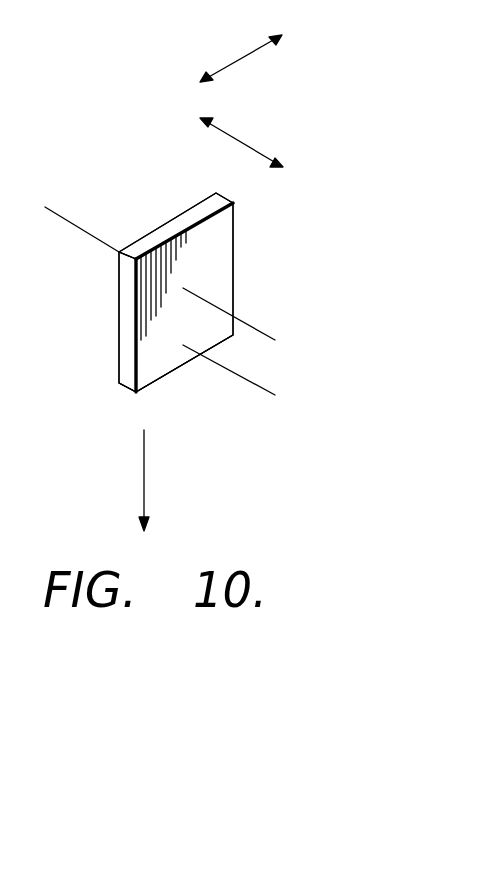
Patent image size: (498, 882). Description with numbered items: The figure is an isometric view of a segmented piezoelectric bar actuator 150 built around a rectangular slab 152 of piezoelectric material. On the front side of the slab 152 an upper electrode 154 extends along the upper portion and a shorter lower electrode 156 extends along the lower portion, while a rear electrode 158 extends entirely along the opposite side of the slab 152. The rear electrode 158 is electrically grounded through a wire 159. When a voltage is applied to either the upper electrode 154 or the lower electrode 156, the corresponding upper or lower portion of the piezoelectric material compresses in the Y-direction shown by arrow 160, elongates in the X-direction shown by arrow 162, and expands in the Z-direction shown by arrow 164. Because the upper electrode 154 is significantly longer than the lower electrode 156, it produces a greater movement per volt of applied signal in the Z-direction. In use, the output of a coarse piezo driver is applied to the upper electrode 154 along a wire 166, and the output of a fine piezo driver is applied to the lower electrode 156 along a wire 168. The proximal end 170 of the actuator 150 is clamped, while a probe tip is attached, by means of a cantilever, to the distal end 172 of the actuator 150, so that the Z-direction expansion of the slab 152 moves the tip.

The segmented piezoelectric bar actuator 150 is at (130, 386).
The rectangular slab 152 is at (127, 294).
The upper electrode 154 is at (215, 243).
The lower electrode 156 is at (160, 364).
The rear electrode 158 is at (175, 215).
The wire 159 is at (60, 215).
The arrow 160 is at (238, 138).
The arrow 162 is at (245, 53).
The arrow 164 is at (143, 470).
The wire 166 is at (245, 322).
The wire 168 is at (257, 385).
The proximal end 170 is at (118, 253).
The distal end 172 is at (118, 377).